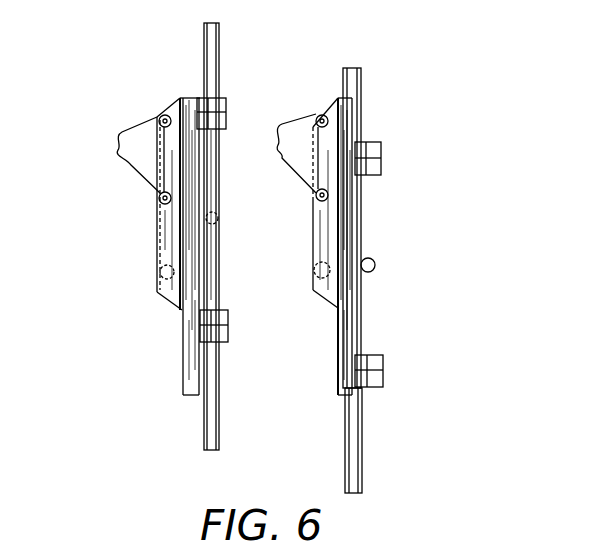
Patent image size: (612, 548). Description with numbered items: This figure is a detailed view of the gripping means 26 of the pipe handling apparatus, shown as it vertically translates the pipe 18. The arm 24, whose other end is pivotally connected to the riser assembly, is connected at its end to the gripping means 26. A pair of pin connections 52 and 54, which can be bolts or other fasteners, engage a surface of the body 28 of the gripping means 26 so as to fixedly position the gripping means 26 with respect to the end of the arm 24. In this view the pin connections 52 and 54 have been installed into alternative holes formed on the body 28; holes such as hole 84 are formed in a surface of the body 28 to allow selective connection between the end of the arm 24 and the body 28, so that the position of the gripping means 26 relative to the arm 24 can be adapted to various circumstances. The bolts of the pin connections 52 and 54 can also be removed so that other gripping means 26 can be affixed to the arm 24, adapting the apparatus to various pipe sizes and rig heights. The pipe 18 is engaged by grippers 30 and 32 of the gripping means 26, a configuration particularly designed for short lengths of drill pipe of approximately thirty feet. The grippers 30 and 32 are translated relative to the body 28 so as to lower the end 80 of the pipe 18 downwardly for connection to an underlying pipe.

The pipe 18 is at (207, 47).
The arm 24 is at (132, 168).
The gripping means 26 is at (163, 237).
The body 28 is at (165, 307).
The gripper 30 is at (223, 102).
The gripper 32 is at (225, 341).
The pin connection 52 is at (160, 120).
The pin connection 54 is at (157, 198).
The end of pipe 80 is at (365, 495).
The hole 84 is at (158, 275).